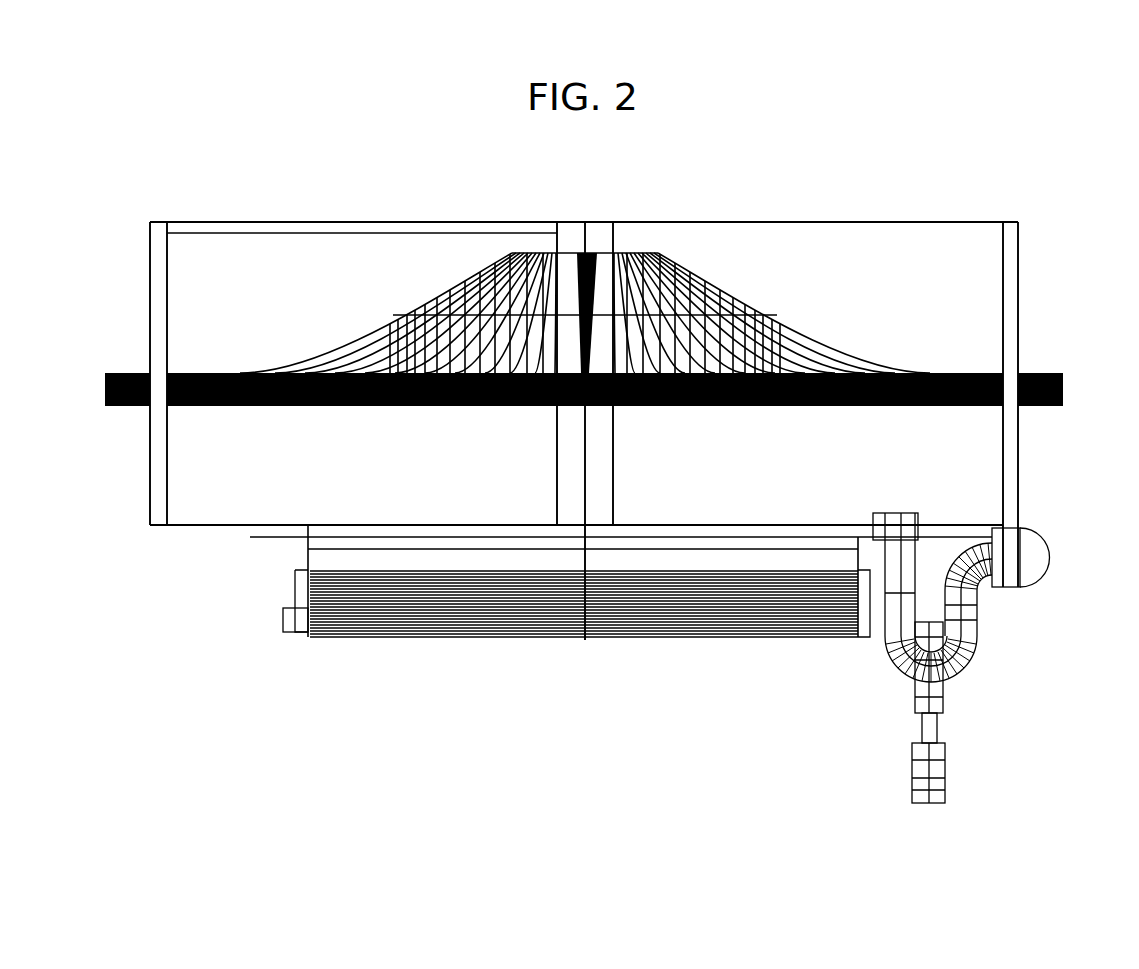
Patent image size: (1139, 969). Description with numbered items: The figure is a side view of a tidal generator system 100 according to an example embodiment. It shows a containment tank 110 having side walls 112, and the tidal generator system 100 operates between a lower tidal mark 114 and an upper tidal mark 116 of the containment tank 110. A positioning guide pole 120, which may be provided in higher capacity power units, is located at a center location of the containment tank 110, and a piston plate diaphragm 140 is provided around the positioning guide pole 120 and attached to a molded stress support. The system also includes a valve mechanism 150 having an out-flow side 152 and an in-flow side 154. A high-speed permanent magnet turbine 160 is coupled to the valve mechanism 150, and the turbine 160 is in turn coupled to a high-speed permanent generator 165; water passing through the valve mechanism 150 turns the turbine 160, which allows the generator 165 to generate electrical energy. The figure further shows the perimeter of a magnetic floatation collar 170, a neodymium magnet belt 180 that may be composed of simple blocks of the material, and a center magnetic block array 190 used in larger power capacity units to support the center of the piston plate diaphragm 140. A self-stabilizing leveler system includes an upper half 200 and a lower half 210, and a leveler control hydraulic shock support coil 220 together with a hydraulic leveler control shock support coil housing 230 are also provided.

The tidal generator system 100 is at (896, 204).
The containment tank 110 is at (150, 473).
The side walls 112 is at (171, 481).
The lower tidal mark 114 is at (252, 537).
The upper tidal mark 116 is at (150, 233).
The positioning guide pole 120 is at (613, 245).
The piston plate diaphragm 140 is at (706, 410).
The valve mechanism 150 is at (993, 628).
The out-flow side 152 is at (902, 508).
The in-flow side 154 is at (1048, 558).
The high-speed permanent magnet turbine 160 is at (917, 650).
The high-speed permanent generator 165 is at (945, 775).
The magnetic floatation collar 170 is at (409, 410).
The neodymium magnet belt 180 is at (340, 410).
The center magnetic block array 190 is at (490, 410).
The upper half of self-stabilizing leveler system 200 is at (303, 550).
The lower half of self-stabilizing leveler system 210 is at (295, 595).
The leveler control hydraulic shock support coil 220 is at (283, 618).
The hydraulic leveler control shock support coil housing 230 is at (585, 645).